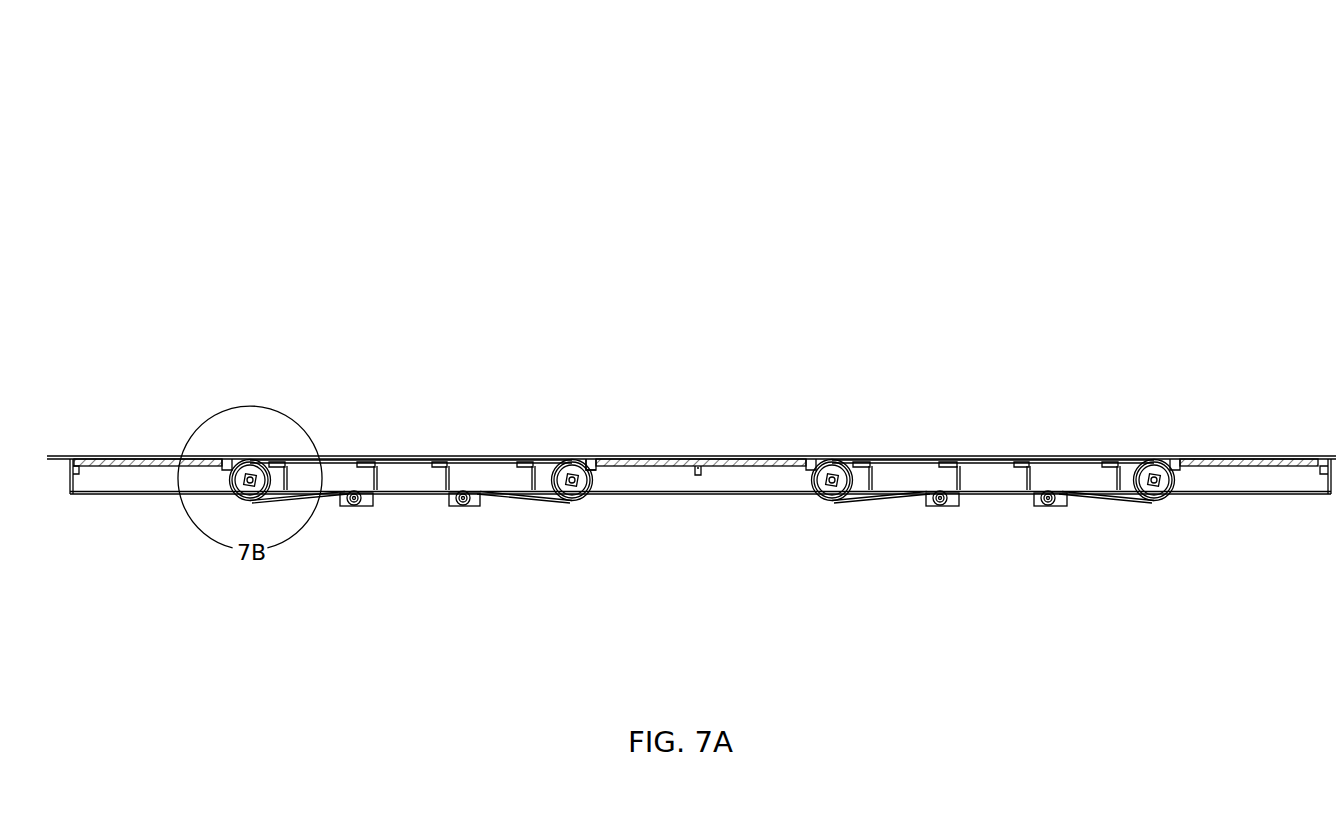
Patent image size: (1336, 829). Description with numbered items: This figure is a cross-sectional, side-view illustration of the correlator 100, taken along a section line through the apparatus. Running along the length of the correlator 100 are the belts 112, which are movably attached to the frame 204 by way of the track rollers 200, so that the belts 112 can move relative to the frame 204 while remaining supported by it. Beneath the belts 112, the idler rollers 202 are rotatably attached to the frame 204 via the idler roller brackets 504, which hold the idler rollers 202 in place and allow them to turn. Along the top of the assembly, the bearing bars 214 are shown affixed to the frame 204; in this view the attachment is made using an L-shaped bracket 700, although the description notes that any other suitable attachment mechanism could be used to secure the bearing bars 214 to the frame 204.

The correlator 100 is at (132, 77).
The belts 112 is at (887, 497).
The track rollers 200 is at (838, 470).
The idler rollers 202 is at (463, 500).
The frame 204 is at (755, 494).
The bearing bars 214 is at (145, 458).
The idler roller brackets 504 is at (480, 501).
The L-shaped bracket 700 is at (603, 468).